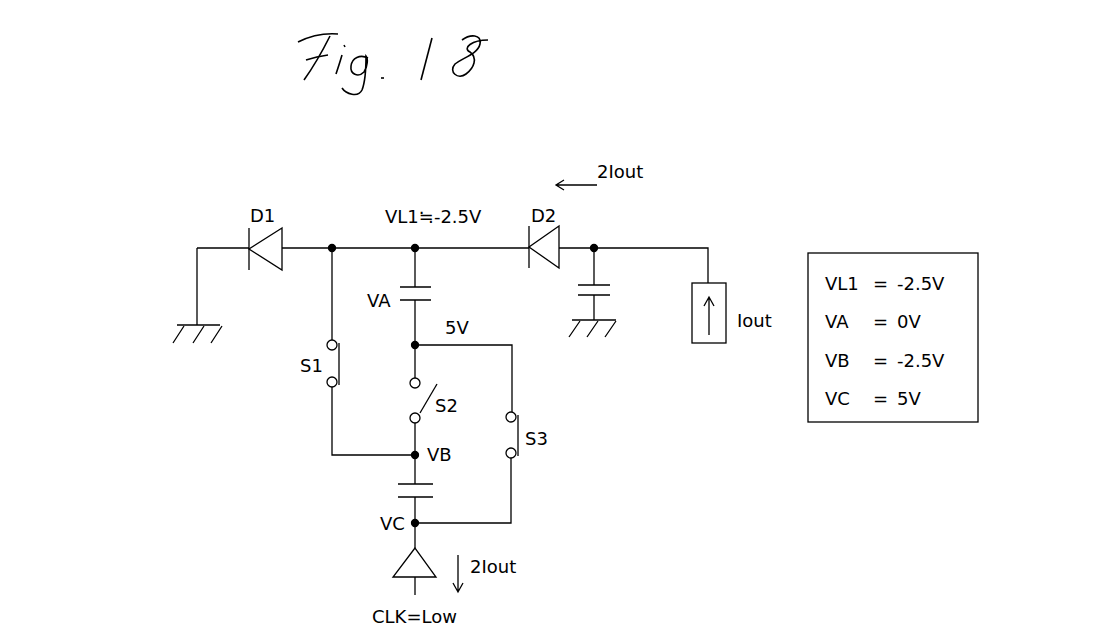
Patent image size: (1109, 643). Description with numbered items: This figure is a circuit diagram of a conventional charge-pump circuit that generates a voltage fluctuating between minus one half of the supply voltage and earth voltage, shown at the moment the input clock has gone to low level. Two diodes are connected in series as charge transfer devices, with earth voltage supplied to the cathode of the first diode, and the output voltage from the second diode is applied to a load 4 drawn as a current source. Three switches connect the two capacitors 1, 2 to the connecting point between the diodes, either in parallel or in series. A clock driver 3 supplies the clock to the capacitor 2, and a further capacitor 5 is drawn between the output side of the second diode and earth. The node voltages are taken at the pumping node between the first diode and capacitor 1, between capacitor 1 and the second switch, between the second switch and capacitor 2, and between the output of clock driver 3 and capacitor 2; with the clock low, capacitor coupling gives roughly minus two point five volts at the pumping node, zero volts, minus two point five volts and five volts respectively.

The capacitor 1 is at (440, 294).
The capacitor 2 is at (392, 485).
The clock driver 3 is at (395, 566).
The load 4 is at (722, 283).
The smoothing capacitor 5 is at (573, 294).